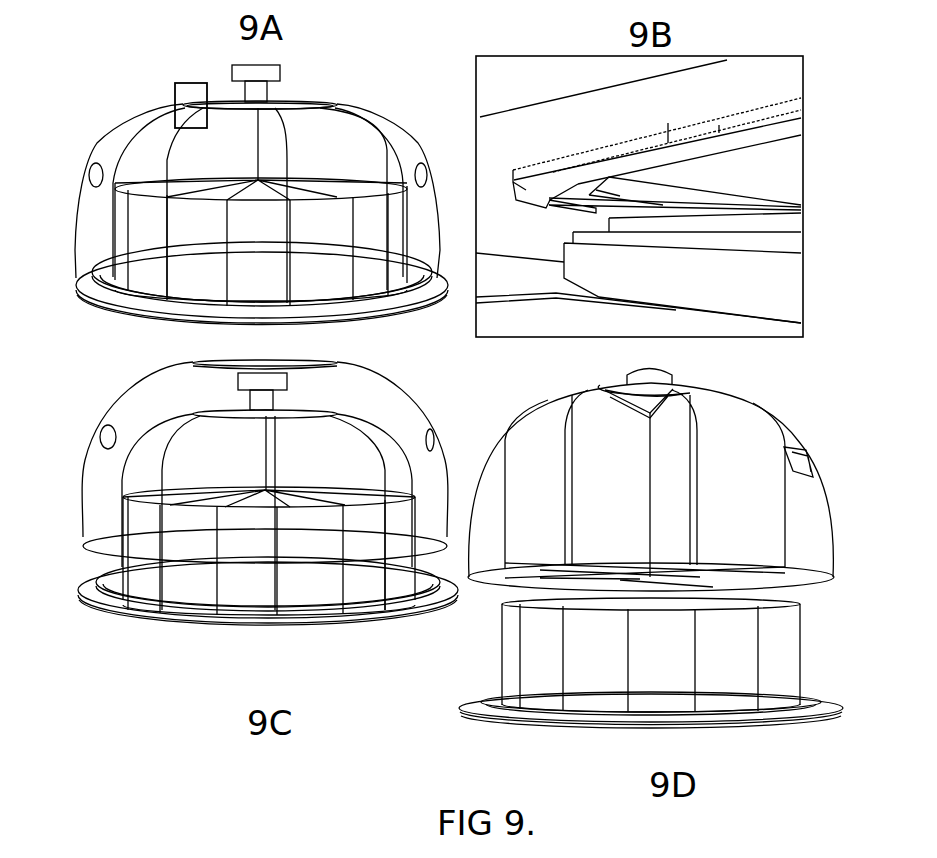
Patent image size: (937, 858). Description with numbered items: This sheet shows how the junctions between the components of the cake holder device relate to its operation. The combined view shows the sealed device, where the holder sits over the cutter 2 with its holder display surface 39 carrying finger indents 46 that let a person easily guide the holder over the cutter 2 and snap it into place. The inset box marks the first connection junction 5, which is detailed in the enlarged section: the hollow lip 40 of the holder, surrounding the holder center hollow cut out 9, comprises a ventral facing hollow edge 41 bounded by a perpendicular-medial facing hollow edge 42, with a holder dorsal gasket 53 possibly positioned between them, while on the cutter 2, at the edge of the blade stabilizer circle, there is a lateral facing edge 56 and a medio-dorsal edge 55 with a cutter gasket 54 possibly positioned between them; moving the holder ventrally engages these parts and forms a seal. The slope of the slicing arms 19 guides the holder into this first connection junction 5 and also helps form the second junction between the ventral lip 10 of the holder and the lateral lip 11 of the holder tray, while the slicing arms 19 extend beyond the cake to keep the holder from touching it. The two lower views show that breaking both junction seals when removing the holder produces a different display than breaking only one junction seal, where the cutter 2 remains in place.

In FIG. 9D, the cutter 2 is at (687, 502).
In FIG. 9A, the first connection junction 5 is at (175, 85).
In FIG. 9B, the first connection junction 5 is at (803, 58).
In FIG. 9B, the holder center hollow cut out 9 is at (767, 178).
In FIG. 9C, the ventral lip 10 is at (88, 543).
In FIG. 9D, the ventral lip 10 is at (828, 577).
In FIG. 9C, the lateral lip 11 is at (98, 593).
In FIG. 9D, the lateral lip 11 is at (476, 712).
In FIG. 9B, the slicing arms 19 is at (493, 267).
In FIG. 9A, the holder display surface 39 is at (120, 133).
In FIG. 9B, the holder display surface 39 is at (528, 120).
In FIG. 9D, the holder display surface 39 is at (818, 528).
In FIG. 9C, the hollow lip 40 is at (222, 360).
In FIG. 9B, the ventral facing hollow edge 41 is at (610, 195).
In FIG. 9B, the perpendicular-medial facing hollow edge 42 is at (522, 192).
In FIG. 9A, the finger indents 46 is at (90, 178).
In FIG. 9C, the finger indents 46 is at (100, 440).
In FIG. 9D, the finger indents 46 is at (807, 460).
In FIG. 9B, the holder dorsal gasket 53 is at (575, 183).
In FIG. 9B, the cutter gasket 54 is at (583, 236).
In FIG. 9B, the medio-dorsal edge 55 is at (663, 220).
In FIG. 9B, the lateral facing edge 56 is at (766, 287).